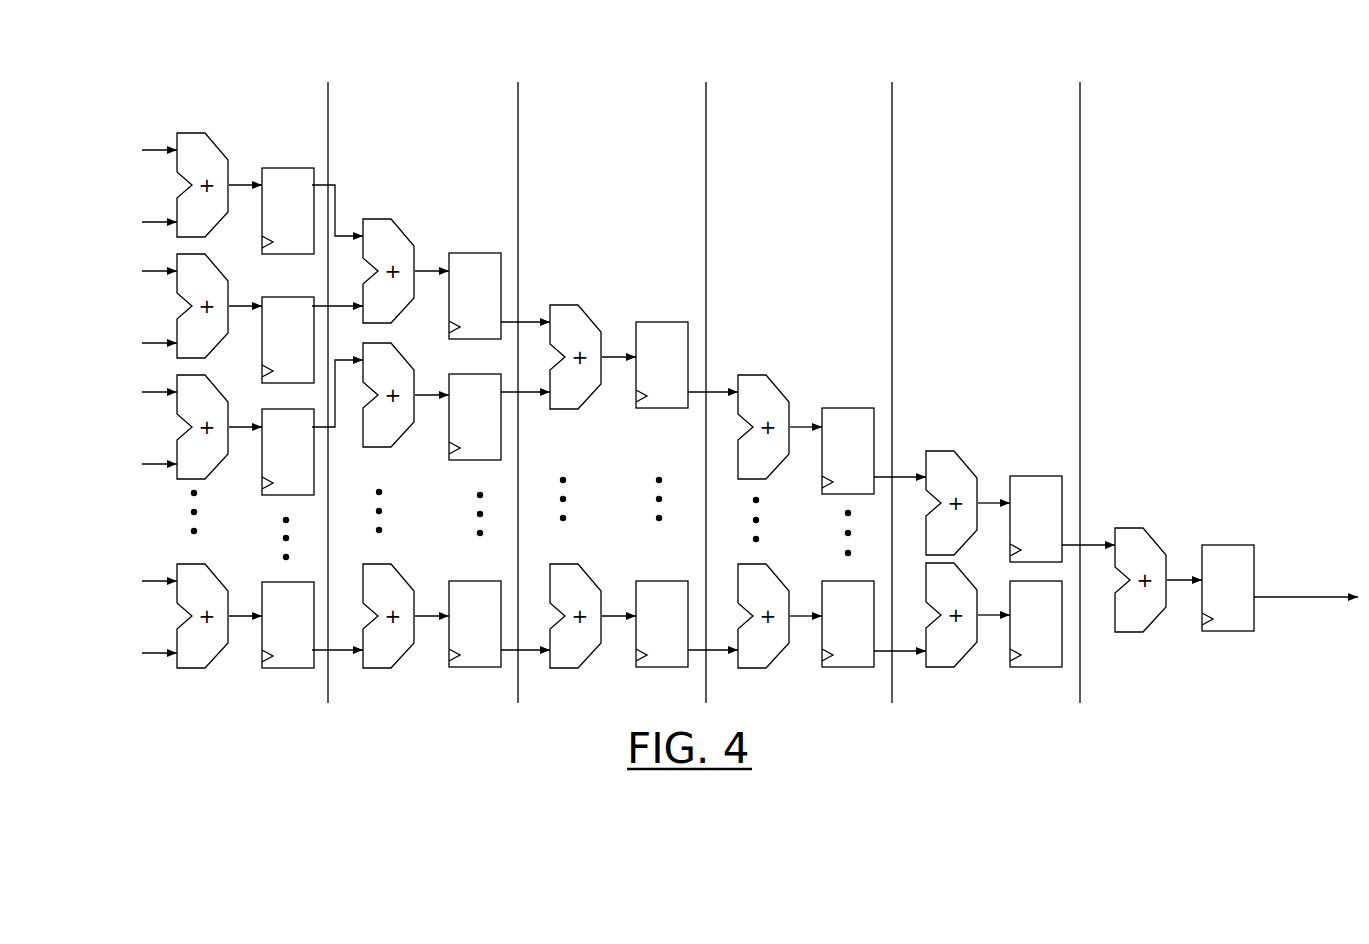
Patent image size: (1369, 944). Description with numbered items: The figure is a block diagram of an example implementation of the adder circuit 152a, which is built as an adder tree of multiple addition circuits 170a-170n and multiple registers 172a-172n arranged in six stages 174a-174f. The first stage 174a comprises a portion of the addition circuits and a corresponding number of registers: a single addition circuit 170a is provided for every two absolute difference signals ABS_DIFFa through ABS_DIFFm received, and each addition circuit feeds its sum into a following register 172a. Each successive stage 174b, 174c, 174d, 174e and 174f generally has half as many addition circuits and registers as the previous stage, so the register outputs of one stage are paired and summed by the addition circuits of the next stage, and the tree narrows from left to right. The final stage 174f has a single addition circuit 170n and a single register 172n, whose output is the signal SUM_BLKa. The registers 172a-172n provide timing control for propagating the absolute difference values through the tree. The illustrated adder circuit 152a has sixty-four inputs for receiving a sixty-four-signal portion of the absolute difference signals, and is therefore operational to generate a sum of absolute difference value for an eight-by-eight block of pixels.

The adder circuit 152a is at (143, 58).
The addition circuit 170a is at (210, 134).
The register 172a is at (295, 166).
The first stage 174a is at (252, 82).
The second stage 174b is at (423, 82).
The third stage 174c is at (612, 82).
The fourth stage 174d is at (798, 82).
The fifth stage 174e is at (985, 82).
The final stage 174f is at (1178, 82).
The addition circuit 170n is at (1120, 528).
The register 172n is at (1219, 546).